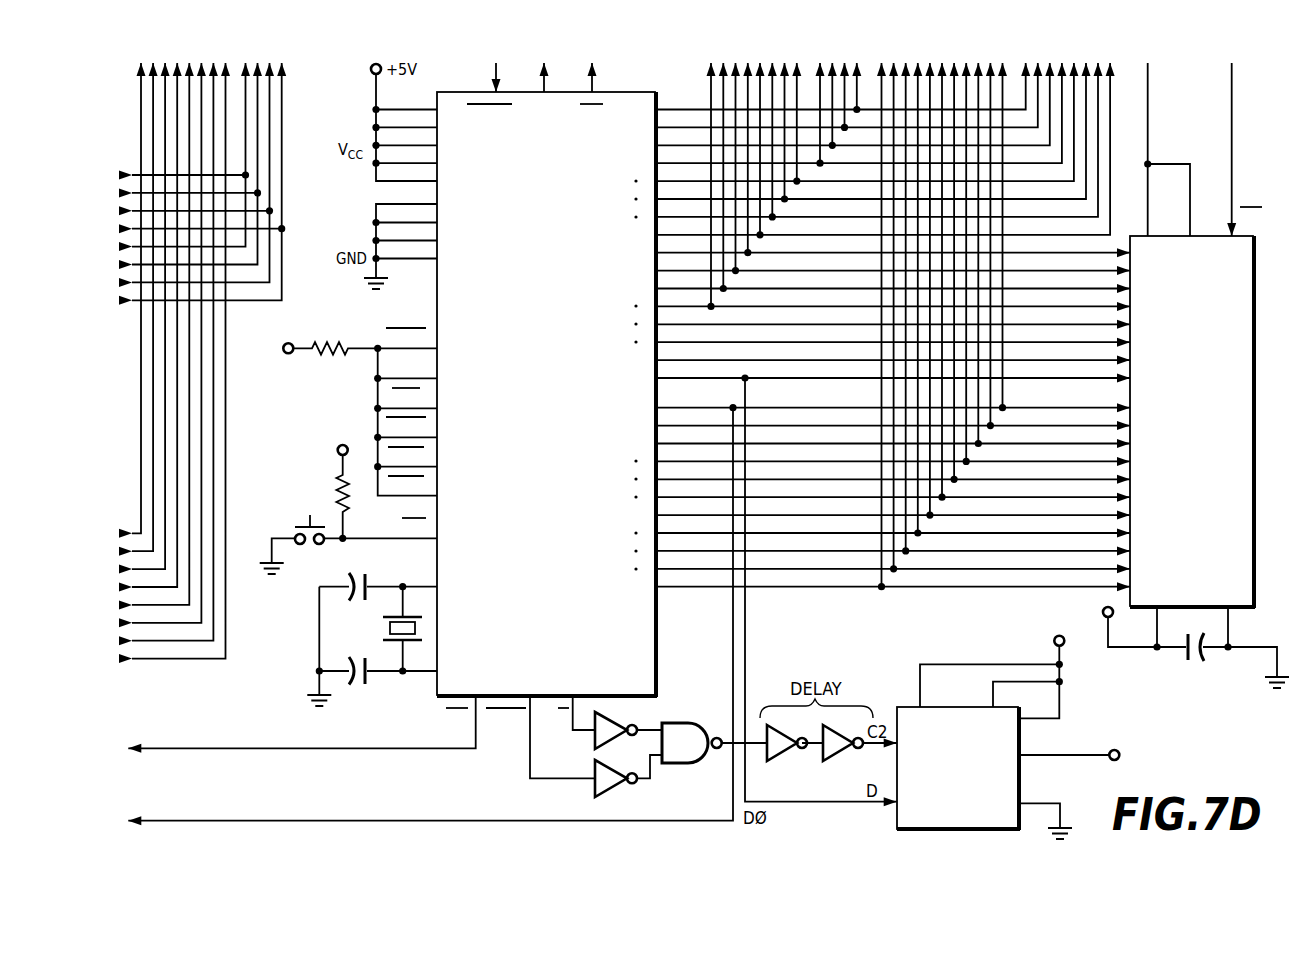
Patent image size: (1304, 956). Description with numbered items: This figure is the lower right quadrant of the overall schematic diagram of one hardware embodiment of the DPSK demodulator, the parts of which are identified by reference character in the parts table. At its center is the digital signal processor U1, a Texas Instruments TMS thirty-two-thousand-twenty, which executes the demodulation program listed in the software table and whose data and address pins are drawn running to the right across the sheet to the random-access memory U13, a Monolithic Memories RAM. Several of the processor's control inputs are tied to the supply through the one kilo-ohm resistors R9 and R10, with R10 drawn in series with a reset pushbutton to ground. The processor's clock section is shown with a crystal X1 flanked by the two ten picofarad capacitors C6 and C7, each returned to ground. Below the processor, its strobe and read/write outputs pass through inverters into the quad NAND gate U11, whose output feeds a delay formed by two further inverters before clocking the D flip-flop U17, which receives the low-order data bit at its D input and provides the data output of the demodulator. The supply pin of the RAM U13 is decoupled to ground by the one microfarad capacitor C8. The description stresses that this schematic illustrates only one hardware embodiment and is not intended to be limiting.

The Texas Instruments TMS 32020 U1 is at (520, 397).
The Monolithic Memories MM063S1681N RAM U13 is at (1177, 375).
The 74HC74 "D" flip-flop U17 is at (1004, 736).
The 74HC000 quad NAND gate U11 is at (692, 743).
The 1 Kilo-Ohm resistor R9 is at (348, 354).
The 1 Kilo-Ohm resistor R10 is at (338, 494).
The 10 pico-Farad capacitor C6 is at (368, 581).
The 10 pico-Farad capacitor C7 is at (368, 680).
The 1 micro-Farad capacitor C8 is at (1200, 664).
The crystal X1 is at (390, 628).